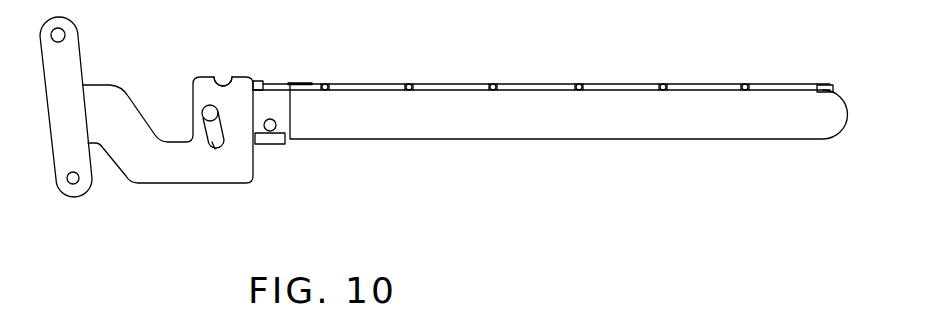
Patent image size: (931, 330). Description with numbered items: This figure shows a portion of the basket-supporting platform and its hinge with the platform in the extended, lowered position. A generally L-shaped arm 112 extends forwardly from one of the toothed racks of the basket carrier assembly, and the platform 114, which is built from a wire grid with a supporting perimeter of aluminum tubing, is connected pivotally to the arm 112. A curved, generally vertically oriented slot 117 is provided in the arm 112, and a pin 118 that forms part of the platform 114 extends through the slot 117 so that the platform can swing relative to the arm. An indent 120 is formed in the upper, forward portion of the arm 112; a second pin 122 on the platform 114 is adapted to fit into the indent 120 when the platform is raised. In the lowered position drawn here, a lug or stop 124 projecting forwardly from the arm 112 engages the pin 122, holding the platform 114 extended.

The arm 112 is at (135, 163).
The platform 114 is at (433, 83).
The slot 117 is at (213, 143).
The pin 118 is at (202, 113).
The indent 120 is at (222, 78).
The pin 122 is at (277, 123).
The lug or stop 124 is at (272, 145).